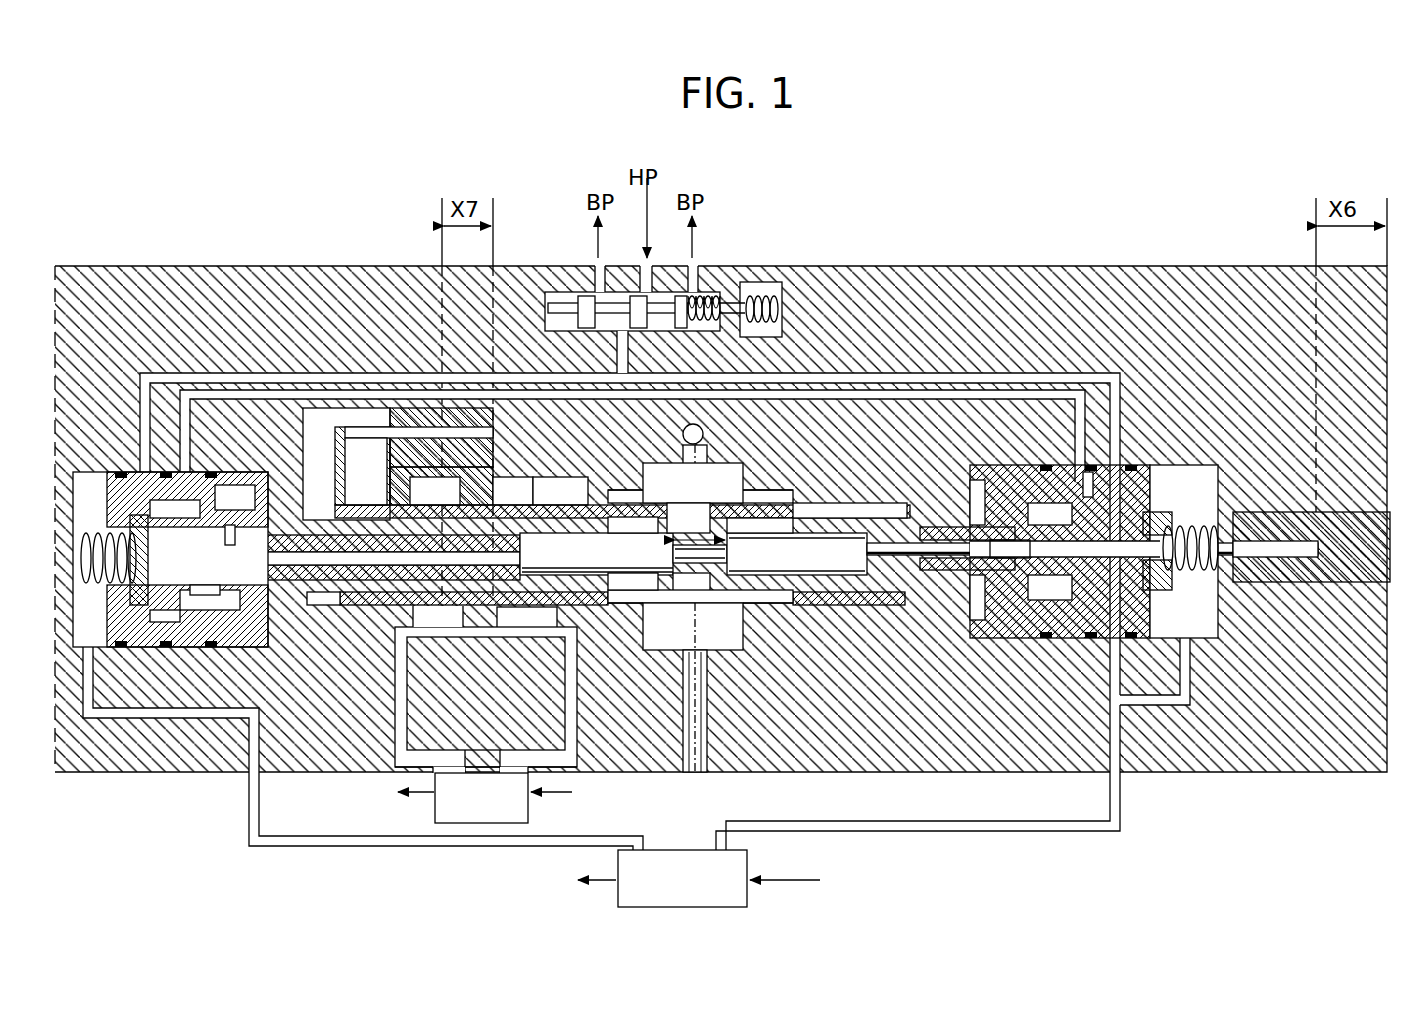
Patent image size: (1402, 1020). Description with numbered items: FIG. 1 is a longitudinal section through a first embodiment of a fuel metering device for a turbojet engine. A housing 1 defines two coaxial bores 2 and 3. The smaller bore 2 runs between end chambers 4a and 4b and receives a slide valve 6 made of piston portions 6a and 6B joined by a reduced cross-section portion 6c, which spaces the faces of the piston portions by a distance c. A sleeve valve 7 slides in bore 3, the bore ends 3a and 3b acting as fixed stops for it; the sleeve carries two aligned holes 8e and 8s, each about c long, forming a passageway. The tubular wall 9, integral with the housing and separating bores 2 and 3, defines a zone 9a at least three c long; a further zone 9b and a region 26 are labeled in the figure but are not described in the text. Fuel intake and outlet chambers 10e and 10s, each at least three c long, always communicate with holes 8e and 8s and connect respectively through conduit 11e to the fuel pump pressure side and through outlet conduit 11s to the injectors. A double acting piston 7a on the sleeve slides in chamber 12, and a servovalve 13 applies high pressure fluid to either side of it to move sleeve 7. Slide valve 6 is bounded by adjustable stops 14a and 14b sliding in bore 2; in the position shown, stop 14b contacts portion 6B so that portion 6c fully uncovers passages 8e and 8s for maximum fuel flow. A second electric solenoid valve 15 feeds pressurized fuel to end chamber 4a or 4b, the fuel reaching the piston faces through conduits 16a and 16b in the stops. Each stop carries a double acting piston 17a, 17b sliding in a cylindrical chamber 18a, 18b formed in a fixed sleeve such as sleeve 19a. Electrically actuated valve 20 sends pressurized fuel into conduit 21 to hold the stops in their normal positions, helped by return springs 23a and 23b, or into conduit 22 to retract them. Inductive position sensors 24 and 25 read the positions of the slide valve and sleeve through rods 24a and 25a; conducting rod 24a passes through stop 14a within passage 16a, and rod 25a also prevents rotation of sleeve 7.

The housing 1 is at (372, 283).
The bore 2 is at (883, 571).
The bore 3 is at (372, 604).
The end of bore 3a is at (903, 605).
The end of bore 3b is at (328, 606).
The end chamber 4a is at (1197, 626).
The end chamber 4b is at (73, 493).
The slide valve 6 is at (760, 525).
The piston portion 6a is at (812, 510).
The piston portion 6B is at (655, 608).
The reduced cross-section portion 6c is at (727, 550).
The sleeve valve 7 is at (427, 600).
The double acting piston 7a is at (478, 492).
The hole 8e is at (680, 512).
The hole 8s is at (684, 592).
The tubular wall 9 is at (548, 540).
The zone 9a is at (668, 555).
The rod sleeve 9b is at (100, 628).
The fuel intake chamber 10e is at (732, 487).
The fuel outlet chamber 10s is at (745, 612).
The conduit 11e is at (703, 430).
The outlet conduit 11s is at (708, 735).
The chamber 12 is at (530, 492).
The servovalve 13 is at (470, 824).
The adjustable stop 14a is at (936, 526).
The adjustable stop 14b is at (436, 540).
The electric solenoid valve 15 is at (698, 908).
The conduit 16a is at (1150, 522).
The conduit 16b is at (208, 595).
The double acting piston 17a is at (1020, 500).
The double acting piston 17b is at (232, 590).
The cylindrical chamber 18a is at (1040, 588).
The cylindrical chamber 18b is at (175, 618).
The sleeve 19a is at (1095, 600).
The electrically actuated valve 20 is at (702, 298).
The conduit 21 is at (888, 374).
The conduit 22 is at (958, 390).
The return spring 23a is at (1195, 528).
The return spring 23b is at (78, 548).
The position sensor 24 is at (1290, 518).
The rod 24a is at (1300, 558).
The position sensor 25 is at (493, 408).
The rod 25a is at (372, 432).
The cylinder chamber 26 is at (322, 430).